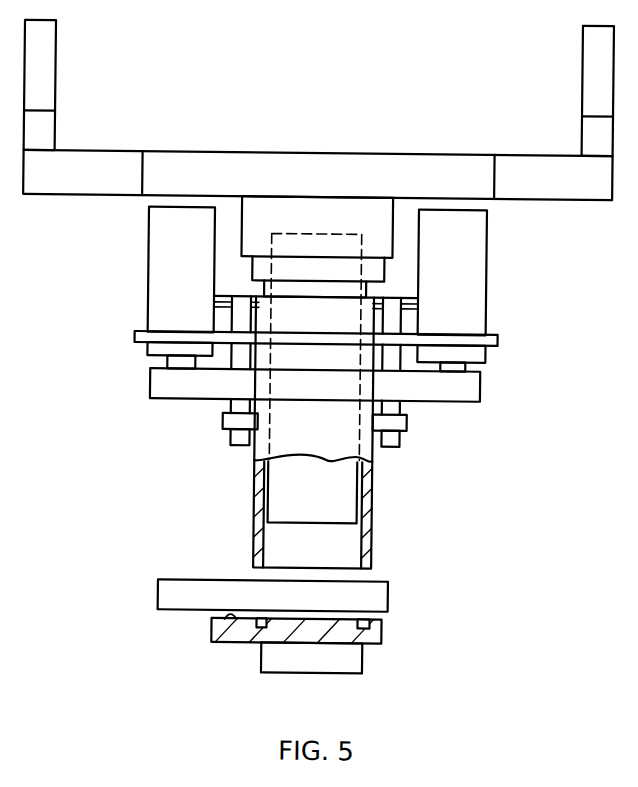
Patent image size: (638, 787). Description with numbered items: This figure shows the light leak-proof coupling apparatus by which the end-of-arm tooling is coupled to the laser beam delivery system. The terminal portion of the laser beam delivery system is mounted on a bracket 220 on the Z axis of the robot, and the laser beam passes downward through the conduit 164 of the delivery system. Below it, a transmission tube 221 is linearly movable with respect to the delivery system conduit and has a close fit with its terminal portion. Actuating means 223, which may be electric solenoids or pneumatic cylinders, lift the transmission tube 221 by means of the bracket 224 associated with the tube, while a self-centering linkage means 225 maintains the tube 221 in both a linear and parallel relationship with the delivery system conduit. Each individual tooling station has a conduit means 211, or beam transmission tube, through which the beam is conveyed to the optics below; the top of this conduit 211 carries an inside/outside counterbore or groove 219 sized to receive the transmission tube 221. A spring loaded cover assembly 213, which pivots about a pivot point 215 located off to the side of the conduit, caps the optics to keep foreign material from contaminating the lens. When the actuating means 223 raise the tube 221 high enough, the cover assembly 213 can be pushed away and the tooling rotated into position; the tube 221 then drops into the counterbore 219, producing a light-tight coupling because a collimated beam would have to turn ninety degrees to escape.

The bracket 220 is at (66, 186).
The conduit 164 is at (378, 212).
The actuating means 223 is at (151, 284).
The bracket 224 is at (455, 396).
The self-centering linkage means 225 is at (400, 442).
The transmission tube 221 is at (375, 548).
The spring loaded cover assembly 213 is at (388, 600).
The pivot point 215 is at (229, 620).
The inside/outside counterbore 219 is at (387, 629).
The conduit means 211 is at (362, 666).